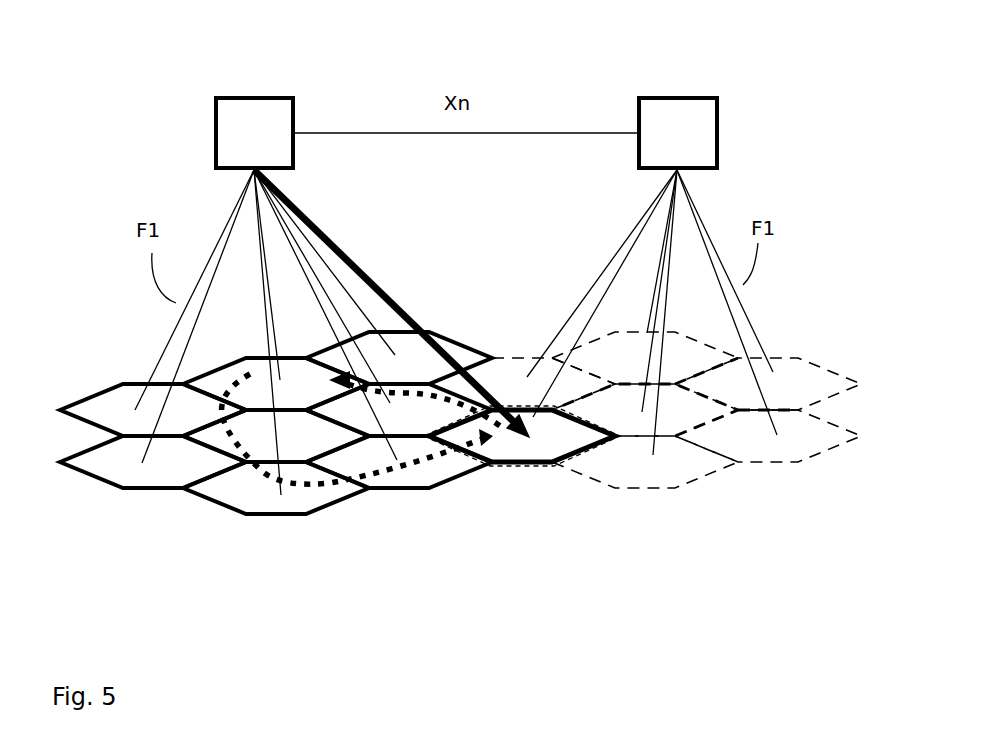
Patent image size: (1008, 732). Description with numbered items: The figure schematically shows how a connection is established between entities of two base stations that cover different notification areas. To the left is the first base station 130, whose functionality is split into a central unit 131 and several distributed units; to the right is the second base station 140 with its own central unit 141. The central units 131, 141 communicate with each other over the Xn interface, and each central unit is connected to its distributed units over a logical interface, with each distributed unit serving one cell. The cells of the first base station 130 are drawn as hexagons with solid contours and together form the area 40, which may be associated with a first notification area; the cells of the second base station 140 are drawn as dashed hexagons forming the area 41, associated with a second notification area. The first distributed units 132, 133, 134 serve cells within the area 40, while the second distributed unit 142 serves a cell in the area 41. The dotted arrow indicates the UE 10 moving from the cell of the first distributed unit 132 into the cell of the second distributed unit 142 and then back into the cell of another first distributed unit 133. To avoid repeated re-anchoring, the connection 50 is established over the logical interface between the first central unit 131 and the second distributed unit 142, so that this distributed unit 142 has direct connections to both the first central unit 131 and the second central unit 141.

The UE 10 is at (480, 442).
The area 40 is at (90, 372).
The area 41 is at (857, 362).
The connection 50 is at (411, 303).
The first base station 130 is at (266, 267).
The central unit 131 is at (234, 146).
The distributed unit 132 is at (413, 483).
The distributed unit 133 is at (431, 405).
The cell of first network node 134 is at (279, 503).
The second base station 140 is at (652, 247).
The central unit 141 is at (658, 146).
The distributed unit 142 is at (510, 457).